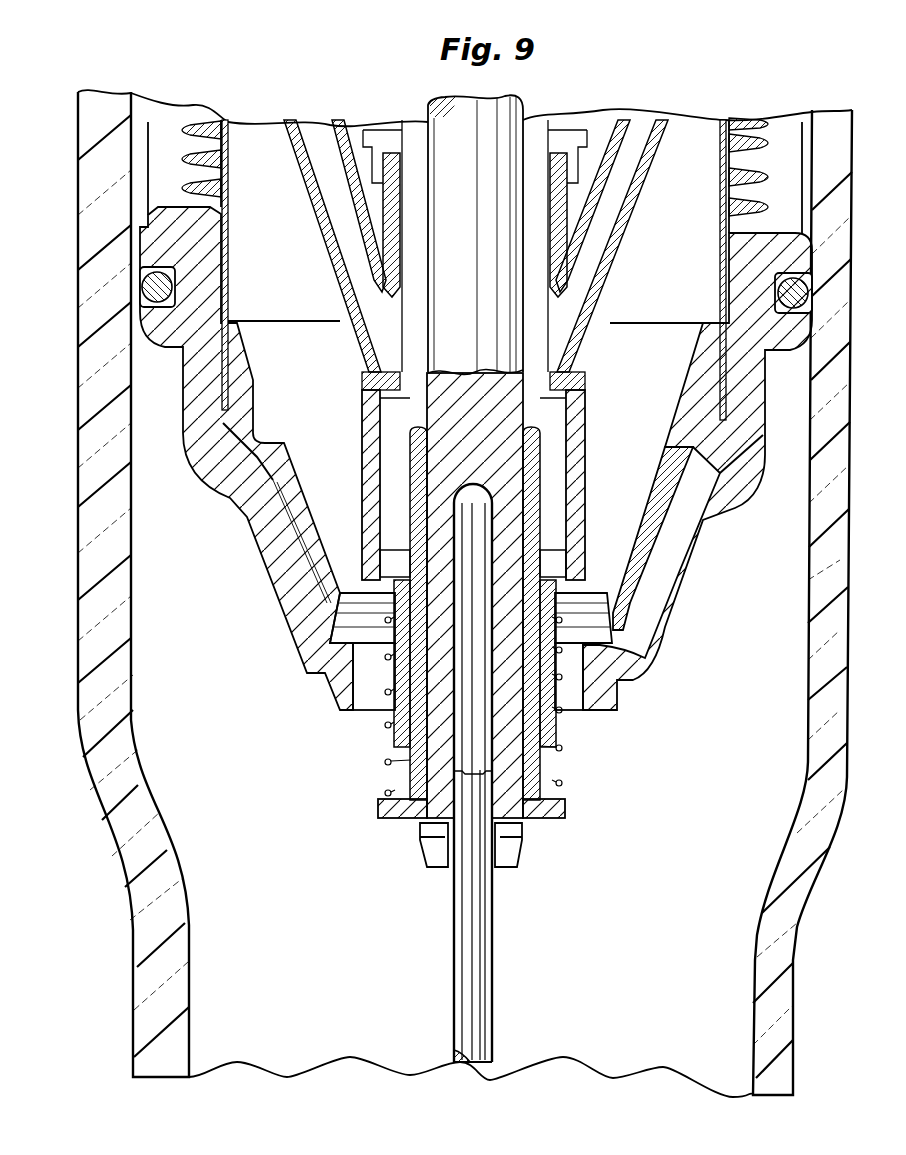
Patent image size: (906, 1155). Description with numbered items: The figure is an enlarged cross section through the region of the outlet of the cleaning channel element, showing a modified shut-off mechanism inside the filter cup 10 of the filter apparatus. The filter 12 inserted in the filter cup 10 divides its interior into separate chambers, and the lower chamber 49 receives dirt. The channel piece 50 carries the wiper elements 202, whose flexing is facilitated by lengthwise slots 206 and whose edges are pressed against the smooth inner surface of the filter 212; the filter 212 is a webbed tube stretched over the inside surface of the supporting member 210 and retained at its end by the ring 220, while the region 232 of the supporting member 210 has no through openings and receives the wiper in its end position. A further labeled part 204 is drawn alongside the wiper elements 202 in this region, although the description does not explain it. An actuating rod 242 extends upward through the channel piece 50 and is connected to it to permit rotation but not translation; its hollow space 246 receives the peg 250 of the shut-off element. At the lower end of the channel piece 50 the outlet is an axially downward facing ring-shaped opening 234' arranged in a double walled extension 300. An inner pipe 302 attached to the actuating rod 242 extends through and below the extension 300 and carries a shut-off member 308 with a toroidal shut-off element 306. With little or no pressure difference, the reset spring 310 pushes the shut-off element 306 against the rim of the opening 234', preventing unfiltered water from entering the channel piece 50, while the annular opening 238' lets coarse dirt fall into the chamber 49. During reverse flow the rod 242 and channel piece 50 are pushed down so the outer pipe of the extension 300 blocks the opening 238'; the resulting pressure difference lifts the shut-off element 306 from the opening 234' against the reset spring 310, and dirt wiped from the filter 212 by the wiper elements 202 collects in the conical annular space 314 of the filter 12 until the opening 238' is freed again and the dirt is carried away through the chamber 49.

The filter cup 10 is at (80, 507).
The filter 12 is at (183, 376).
The chamber 49 is at (235, 828).
The channel piece 50 is at (301, 180).
The wiper elements 202 is at (635, 221).
The threaded portion 204 is at (727, 140).
The lengthwise slots 206 is at (620, 257).
The supporting member 210 is at (131, 108).
The filter 212 is at (200, 169).
The ring 220 is at (293, 495).
The region 232 is at (200, 226).
The ring-shaped opening 234' is at (689, 552).
The annular opening 238' is at (286, 562).
The actuating rod 242 is at (452, 208).
The hollow space 246 is at (460, 714).
The peg 250 is at (477, 930).
The double walled extension 300 is at (586, 443).
The inner pipe 302 is at (528, 484).
The toroidal shut-off element 306 is at (380, 592).
The shut-off member 308 is at (353, 710).
The reset spring 310 is at (545, 713).
The conical annular space 314 is at (605, 548).